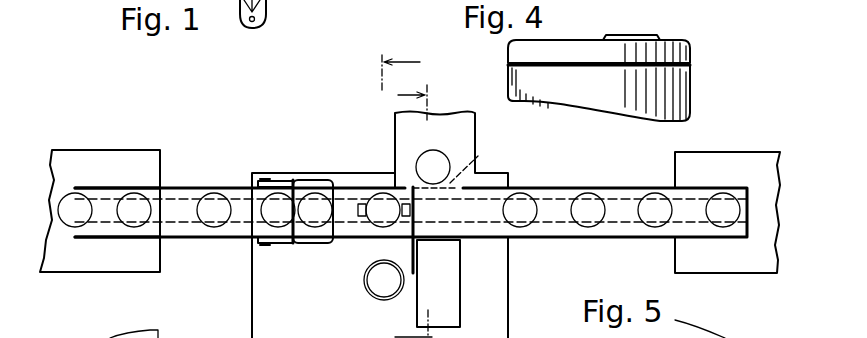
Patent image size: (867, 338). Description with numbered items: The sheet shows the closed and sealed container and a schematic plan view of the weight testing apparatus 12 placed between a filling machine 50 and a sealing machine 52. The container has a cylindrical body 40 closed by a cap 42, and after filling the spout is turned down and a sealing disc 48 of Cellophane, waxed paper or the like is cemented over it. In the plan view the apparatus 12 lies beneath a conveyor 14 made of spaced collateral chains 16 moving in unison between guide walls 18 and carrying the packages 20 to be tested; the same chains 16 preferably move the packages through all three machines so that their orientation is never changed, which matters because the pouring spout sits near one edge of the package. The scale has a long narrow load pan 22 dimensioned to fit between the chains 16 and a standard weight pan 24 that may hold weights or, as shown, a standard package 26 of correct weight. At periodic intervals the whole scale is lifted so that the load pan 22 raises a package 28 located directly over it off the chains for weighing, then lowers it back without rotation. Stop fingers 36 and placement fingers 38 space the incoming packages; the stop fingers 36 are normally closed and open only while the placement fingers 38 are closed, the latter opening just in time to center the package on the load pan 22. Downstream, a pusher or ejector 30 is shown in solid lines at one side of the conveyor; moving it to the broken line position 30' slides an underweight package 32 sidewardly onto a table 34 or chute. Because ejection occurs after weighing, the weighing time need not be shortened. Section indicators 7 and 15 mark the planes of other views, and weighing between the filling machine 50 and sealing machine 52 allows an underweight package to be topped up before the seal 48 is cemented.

In FIG. 5, the section line 7 is at (410, 72).
In FIG. 5, the weight testing apparatus 12 is at (527, 282).
In FIG. 5, the conveyor 14 is at (570, 185).
In FIG. 5, the section line 15 is at (412, 208).
In FIG. 5, the conveyor chains 16 is at (188, 220).
In FIG. 5, the guide walls 18 is at (112, 186).
In FIG. 5, the packages 20 is at (80, 200).
In FIG. 5, the load pan 22 is at (361, 204).
In FIG. 5, the standard weight pan 24 is at (368, 283).
In FIG. 5, the standard package 26 is at (380, 275).
In FIG. 5, the package 28 is at (383, 195).
In FIG. 5, the pusher or ejector 30 is at (451, 257).
In FIG. 5, the broken line position of ejector 30' is at (483, 165).
In FIG. 5, the underweight package 32 is at (440, 160).
In FIG. 5, the table 34 is at (466, 131).
In FIG. 5, the stop fingers 36 is at (276, 183).
In FIG. 5, the placement fingers 38 is at (313, 181).
In FIG. 4, the cylindrical body 40 is at (692, 93).
In FIG. 4, the cap 42 is at (692, 46).
In FIG. 4, the sealing disc 48 is at (640, 36).
In FIG. 5, the filling machine 50 is at (62, 274).
In FIG. 5, the sealing machine 52 is at (745, 258).